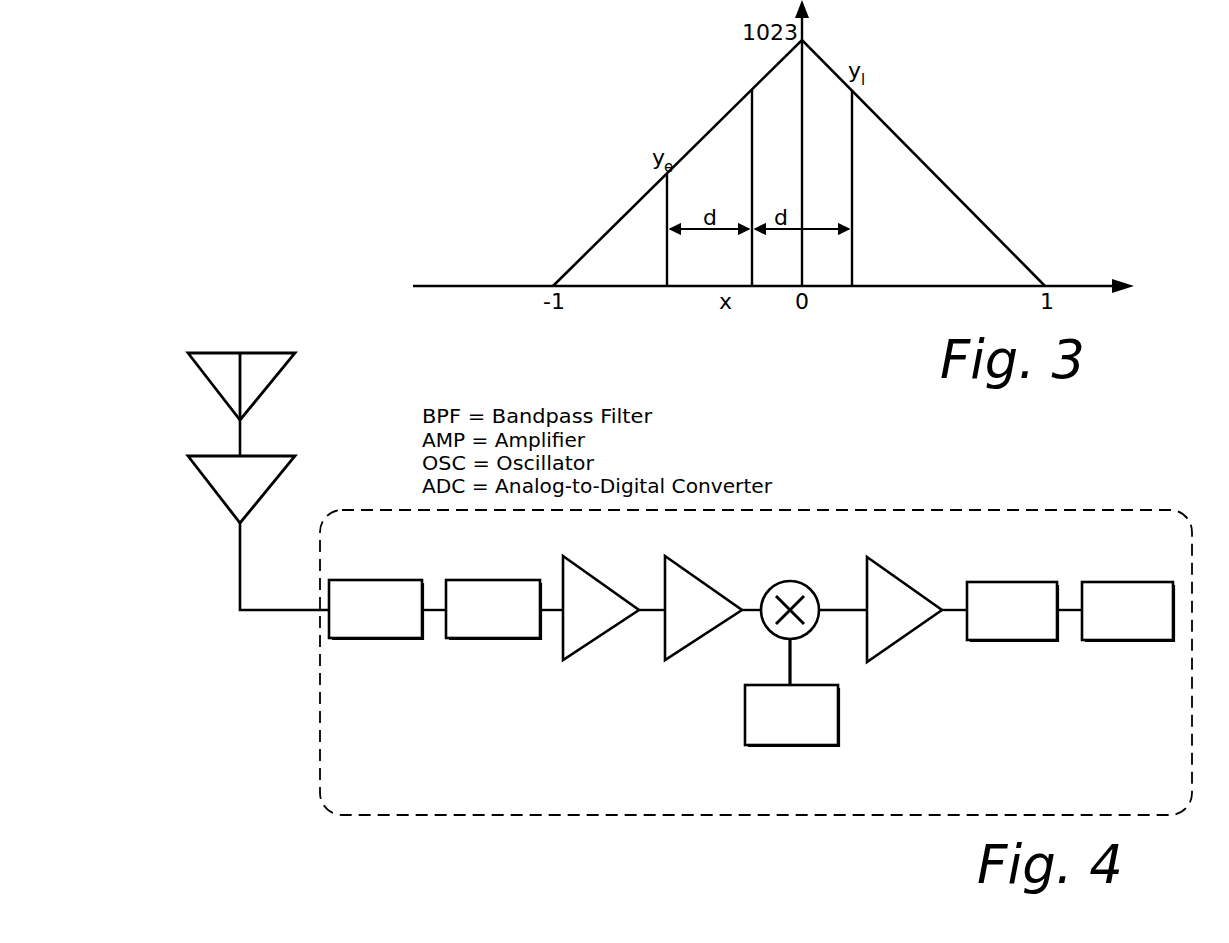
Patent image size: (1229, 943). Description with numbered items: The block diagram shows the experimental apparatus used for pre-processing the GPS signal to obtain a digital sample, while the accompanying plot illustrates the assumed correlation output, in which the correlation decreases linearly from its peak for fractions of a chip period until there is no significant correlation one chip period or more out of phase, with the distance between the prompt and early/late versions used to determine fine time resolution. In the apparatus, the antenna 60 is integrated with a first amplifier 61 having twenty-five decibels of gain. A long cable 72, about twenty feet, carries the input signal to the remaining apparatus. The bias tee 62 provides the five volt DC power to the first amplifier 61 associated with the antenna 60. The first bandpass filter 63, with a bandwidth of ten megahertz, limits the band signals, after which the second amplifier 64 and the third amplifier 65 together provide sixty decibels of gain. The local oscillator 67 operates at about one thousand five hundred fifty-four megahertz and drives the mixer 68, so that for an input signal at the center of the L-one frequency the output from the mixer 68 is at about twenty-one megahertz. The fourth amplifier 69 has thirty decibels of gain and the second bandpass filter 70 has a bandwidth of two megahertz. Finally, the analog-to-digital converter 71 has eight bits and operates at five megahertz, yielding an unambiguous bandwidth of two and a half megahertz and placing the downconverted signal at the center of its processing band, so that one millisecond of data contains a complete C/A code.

The antenna 60 is at (267, 393).
The first amplifier 61 is at (268, 503).
The bias tee 62 is at (370, 638).
The bandpass filter 1 63 is at (482, 638).
The amplifier 2 64 is at (595, 642).
The amplifier 3 65 is at (697, 642).
The local oscillator 67 is at (785, 746).
The mixer 68 is at (795, 581).
The amplifier 4 69 is at (898, 642).
The bandpass filter 2 70 is at (1000, 640).
The analog-to-digital converter 71 is at (1113, 640).
The long cable 72 is at (232, 592).